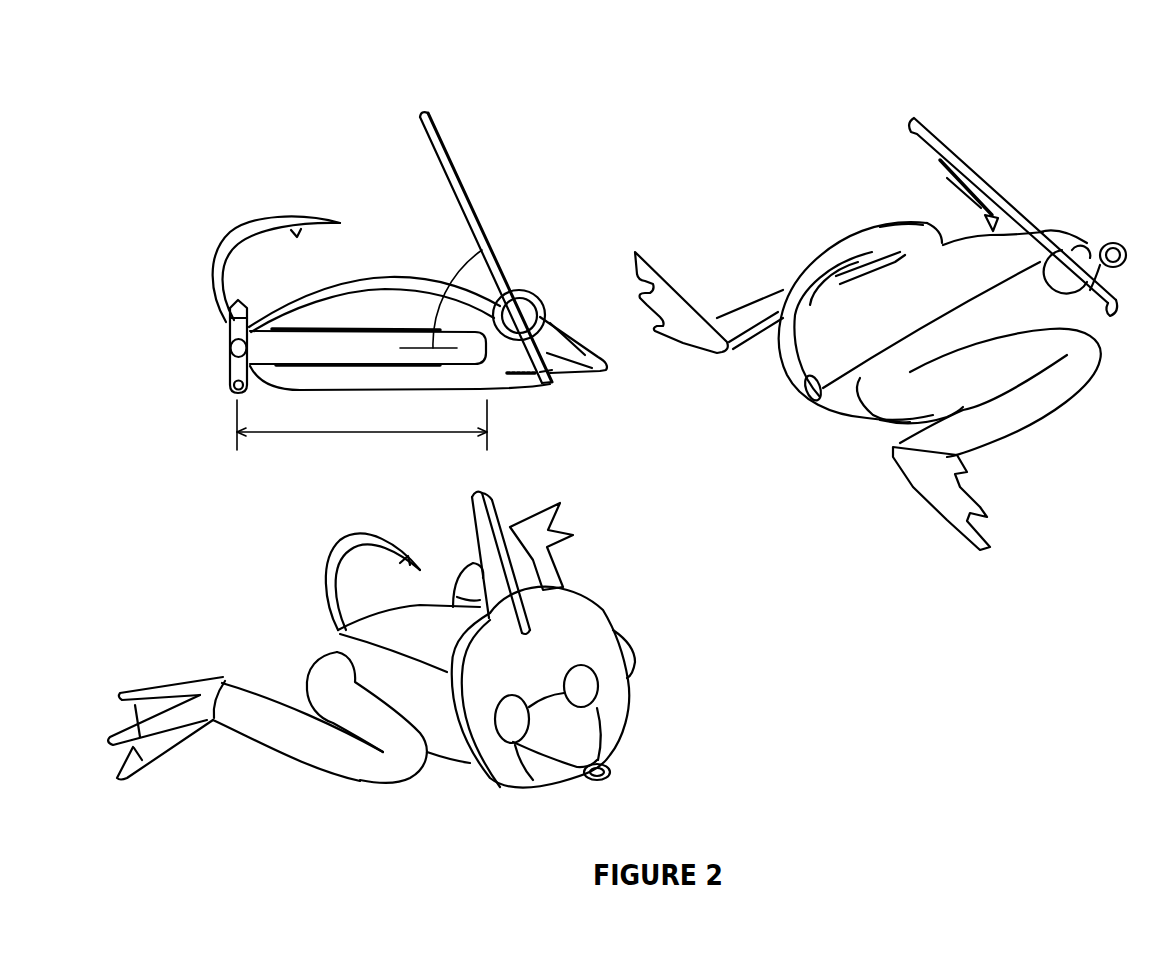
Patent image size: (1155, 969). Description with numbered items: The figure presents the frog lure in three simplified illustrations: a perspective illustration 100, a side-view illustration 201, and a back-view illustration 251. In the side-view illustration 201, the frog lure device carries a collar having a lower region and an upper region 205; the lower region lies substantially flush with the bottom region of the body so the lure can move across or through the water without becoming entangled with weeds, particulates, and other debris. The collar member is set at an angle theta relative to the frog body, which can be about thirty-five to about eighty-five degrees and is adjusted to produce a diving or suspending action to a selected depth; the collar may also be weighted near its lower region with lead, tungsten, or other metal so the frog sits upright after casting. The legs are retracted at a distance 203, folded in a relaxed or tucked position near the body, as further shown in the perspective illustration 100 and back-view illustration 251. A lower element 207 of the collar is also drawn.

The perspective illustration 100 is at (630, 566).
The side-view illustration 201 is at (533, 186).
The retracted leg distance 203 is at (363, 437).
The upper region of the collar 205 is at (419, 112).
The distal end of rod 207 is at (549, 388).
The back-view illustration 251 is at (1050, 158).